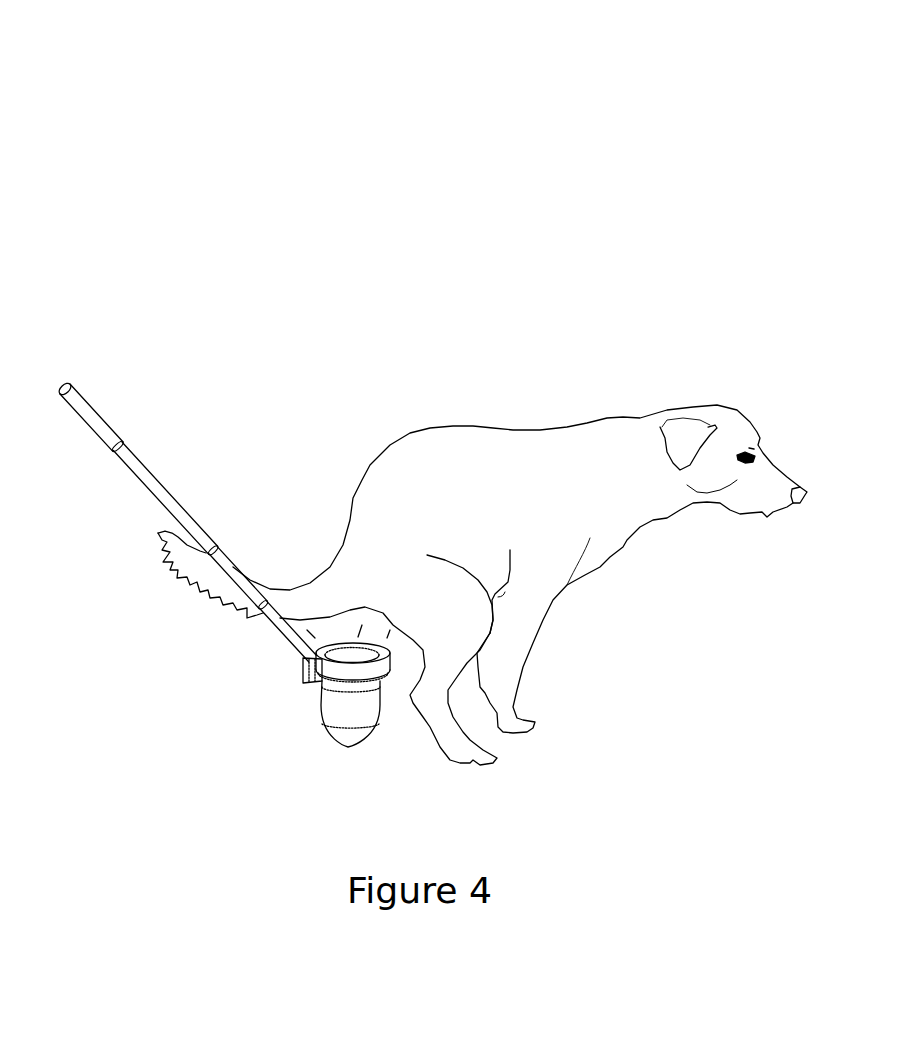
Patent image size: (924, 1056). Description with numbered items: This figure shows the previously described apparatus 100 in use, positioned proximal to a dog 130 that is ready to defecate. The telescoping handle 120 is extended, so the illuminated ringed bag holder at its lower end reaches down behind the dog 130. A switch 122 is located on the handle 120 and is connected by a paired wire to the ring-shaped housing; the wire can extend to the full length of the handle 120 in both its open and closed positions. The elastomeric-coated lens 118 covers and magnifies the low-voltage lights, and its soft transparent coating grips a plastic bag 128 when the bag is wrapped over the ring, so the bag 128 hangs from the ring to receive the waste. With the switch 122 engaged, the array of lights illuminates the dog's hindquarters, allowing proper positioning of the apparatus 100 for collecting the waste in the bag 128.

The apparatus 100 is at (190, 51).
The elastomeric-coated lens 118 is at (346, 641).
The telescoping handle 120 is at (90, 410).
The switch 122 is at (118, 424).
The bag 128 is at (343, 737).
The dog 130 is at (487, 394).